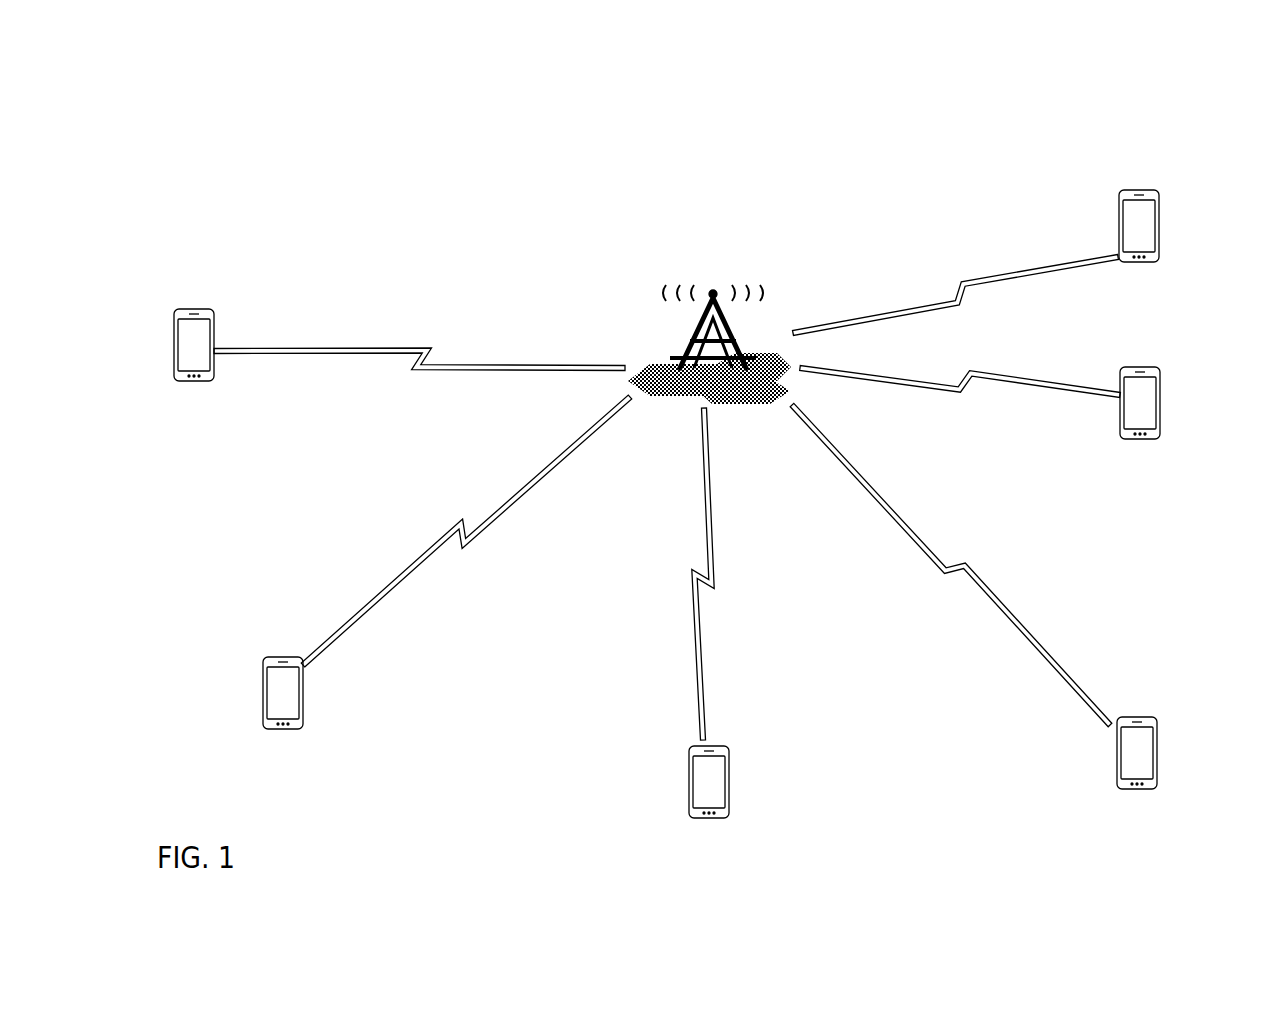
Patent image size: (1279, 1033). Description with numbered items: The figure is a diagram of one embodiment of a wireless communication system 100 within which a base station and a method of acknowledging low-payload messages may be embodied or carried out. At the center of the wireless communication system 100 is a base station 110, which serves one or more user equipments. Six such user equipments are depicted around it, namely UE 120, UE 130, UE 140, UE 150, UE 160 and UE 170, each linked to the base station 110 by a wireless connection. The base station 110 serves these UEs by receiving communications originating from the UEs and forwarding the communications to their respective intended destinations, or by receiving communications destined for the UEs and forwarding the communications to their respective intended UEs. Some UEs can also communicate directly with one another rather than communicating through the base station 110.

The wireless communication system 100 is at (277, 125).
The base station 110 is at (642, 310).
The UE 120 is at (216, 318).
The UE 130 is at (262, 663).
The UE 140 is at (733, 782).
The UE 150 is at (1116, 786).
The UE 160 is at (1160, 368).
The UE 170 is at (1147, 190).